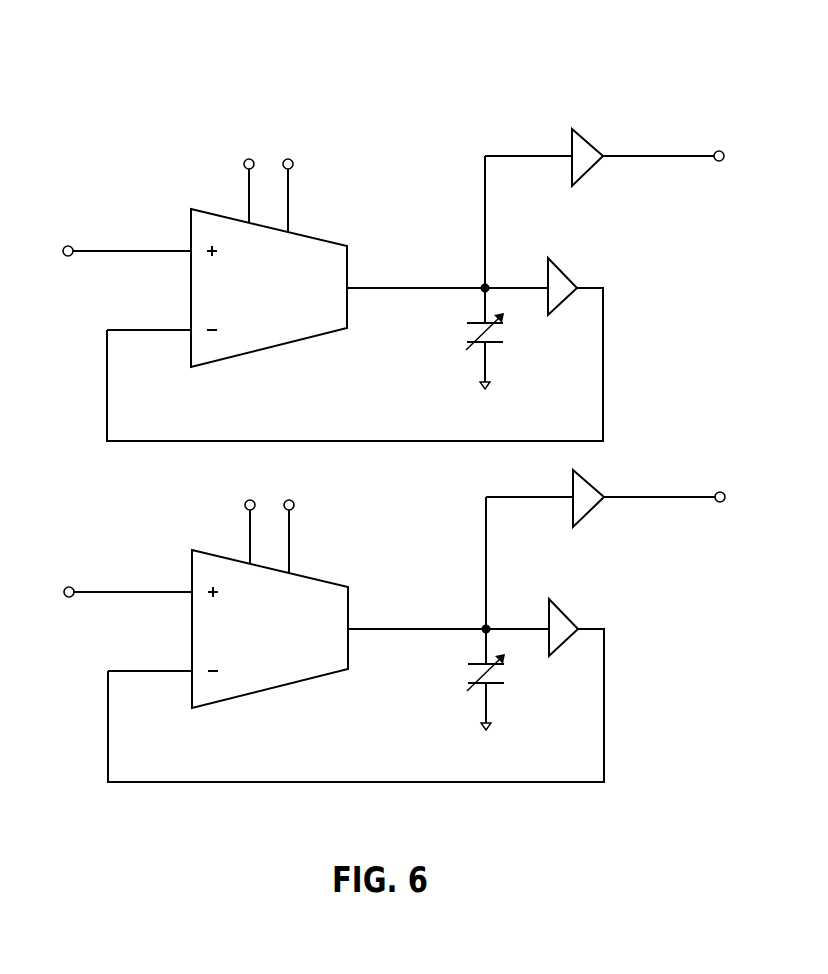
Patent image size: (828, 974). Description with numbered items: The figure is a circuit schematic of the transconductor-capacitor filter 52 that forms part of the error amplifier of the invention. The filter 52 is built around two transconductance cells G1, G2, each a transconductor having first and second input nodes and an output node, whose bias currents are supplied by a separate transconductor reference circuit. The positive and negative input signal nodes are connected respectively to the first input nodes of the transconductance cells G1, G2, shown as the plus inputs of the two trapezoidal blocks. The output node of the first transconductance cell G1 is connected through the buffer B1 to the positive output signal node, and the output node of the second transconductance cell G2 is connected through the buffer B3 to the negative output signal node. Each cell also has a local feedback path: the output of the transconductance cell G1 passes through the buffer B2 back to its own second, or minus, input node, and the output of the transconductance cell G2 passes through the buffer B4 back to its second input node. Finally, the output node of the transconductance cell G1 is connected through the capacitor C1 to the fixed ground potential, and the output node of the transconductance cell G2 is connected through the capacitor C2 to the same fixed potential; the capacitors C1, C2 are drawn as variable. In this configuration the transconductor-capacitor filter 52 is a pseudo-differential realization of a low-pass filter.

The transconductor-capacitor filter 52 is at (158, 75).
The transconductance cell G1 is at (269, 288).
The transconductance cell G2 is at (270, 629).
The buffer B1 is at (592, 164).
The buffer B2 is at (569, 293).
The buffer B3 is at (593, 505).
The buffer B4 is at (570, 634).
The capacitor C1 is at (467, 331).
The capacitor C2 is at (468, 672).